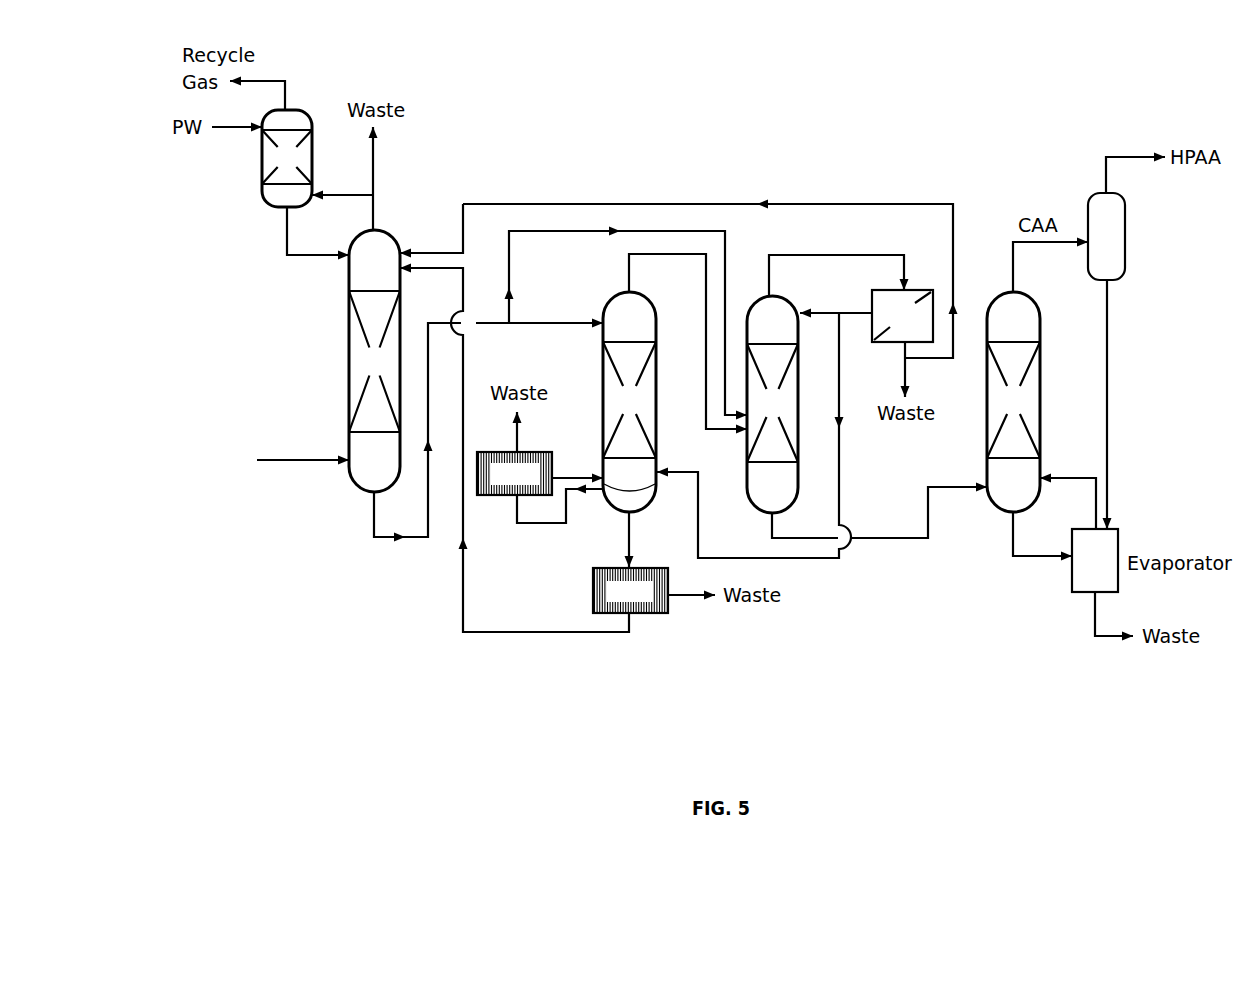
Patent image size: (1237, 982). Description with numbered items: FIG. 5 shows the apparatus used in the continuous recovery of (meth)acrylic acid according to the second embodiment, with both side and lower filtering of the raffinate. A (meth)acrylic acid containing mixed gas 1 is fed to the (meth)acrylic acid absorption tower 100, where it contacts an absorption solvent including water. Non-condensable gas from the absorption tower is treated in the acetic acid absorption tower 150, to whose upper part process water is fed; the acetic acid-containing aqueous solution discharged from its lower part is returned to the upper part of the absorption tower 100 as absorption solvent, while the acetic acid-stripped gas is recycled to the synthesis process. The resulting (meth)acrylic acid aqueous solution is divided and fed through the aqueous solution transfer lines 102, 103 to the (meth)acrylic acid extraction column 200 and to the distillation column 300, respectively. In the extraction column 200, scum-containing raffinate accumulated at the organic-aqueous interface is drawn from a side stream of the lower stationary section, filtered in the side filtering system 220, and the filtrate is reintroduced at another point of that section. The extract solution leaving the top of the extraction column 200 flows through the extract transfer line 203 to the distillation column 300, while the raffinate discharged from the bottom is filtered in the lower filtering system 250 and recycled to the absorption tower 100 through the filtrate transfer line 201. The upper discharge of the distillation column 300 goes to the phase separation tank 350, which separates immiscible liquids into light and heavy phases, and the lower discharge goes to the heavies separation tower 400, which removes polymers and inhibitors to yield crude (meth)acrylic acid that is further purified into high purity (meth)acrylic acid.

The (meth)acrylic acid containing mixed gas 1 is at (293, 460).
The (meth)acrylic acid absorption tower 100 is at (374, 361).
The (meth)acrylic acid aqueous solution transfer line 102 is at (488, 430).
The (meth)acrylic acid aqueous solution transfer line 103 is at (626, 323).
The acetic acid absorption tower 150 is at (287, 158).
The (meth)acrylic acid extraction column 200 is at (629, 402).
The filtrate transfer line 201 is at (514, 448).
The extract transfer line 203 is at (688, 344).
The side filtering system 220 is at (540, 467).
The lower filtering system 250 is at (654, 562).
The distillation column 300 is at (772, 404).
The phase separation tank 350 is at (795, 424).
The heavies separation tower 400 is at (1013, 402).